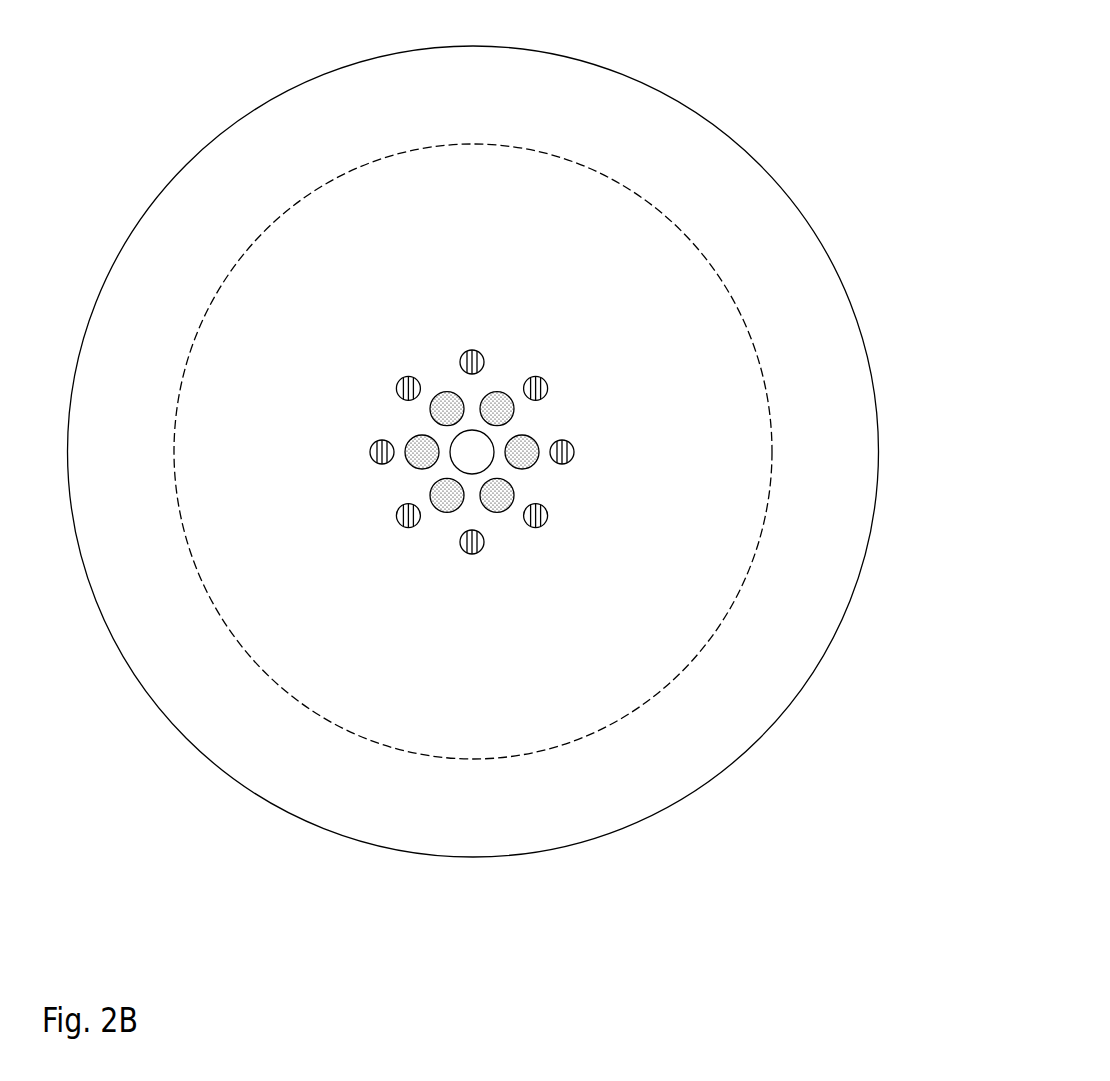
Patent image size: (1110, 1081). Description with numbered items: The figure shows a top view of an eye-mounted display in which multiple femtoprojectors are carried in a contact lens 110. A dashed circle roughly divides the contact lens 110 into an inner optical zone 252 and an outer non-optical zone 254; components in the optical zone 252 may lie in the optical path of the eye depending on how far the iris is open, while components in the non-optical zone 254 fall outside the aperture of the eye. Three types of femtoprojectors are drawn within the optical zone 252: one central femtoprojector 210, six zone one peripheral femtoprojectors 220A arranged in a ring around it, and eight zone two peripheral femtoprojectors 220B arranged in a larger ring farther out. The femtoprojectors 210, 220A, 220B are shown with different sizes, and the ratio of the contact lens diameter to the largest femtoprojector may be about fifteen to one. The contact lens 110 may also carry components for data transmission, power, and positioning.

The contact lens 110 is at (597, 65).
The non-optical zone 254 is at (522, 124).
The optical zone 252 is at (545, 208).
The central femtoprojector 210 is at (453, 436).
The zone 1 peripheral femtoprojectors 220A is at (534, 440).
The zone 2 peripheral femtoprojectors 220B is at (480, 352).